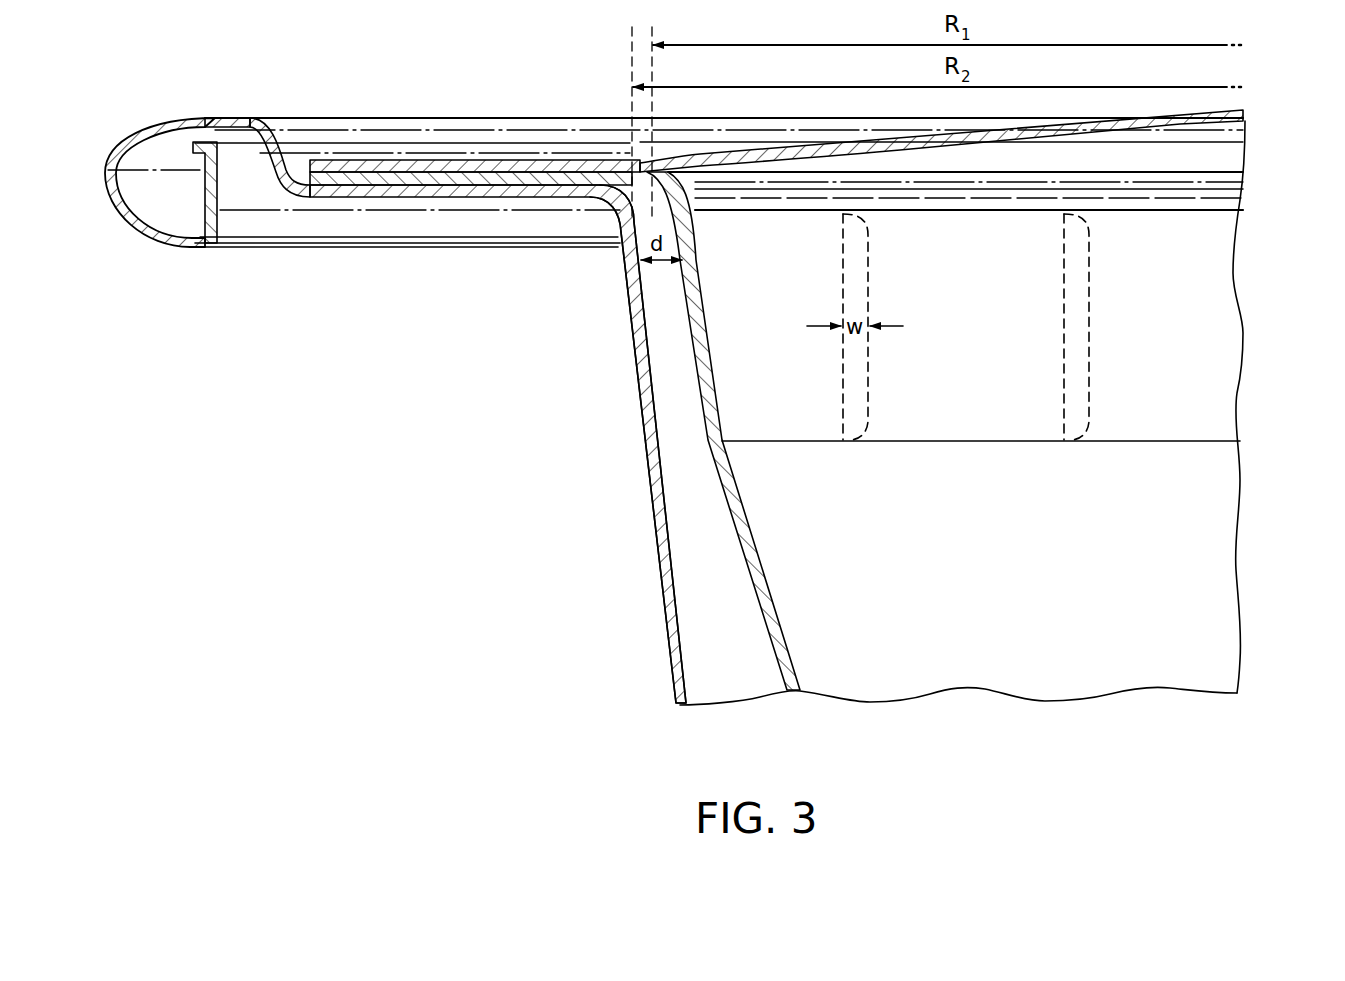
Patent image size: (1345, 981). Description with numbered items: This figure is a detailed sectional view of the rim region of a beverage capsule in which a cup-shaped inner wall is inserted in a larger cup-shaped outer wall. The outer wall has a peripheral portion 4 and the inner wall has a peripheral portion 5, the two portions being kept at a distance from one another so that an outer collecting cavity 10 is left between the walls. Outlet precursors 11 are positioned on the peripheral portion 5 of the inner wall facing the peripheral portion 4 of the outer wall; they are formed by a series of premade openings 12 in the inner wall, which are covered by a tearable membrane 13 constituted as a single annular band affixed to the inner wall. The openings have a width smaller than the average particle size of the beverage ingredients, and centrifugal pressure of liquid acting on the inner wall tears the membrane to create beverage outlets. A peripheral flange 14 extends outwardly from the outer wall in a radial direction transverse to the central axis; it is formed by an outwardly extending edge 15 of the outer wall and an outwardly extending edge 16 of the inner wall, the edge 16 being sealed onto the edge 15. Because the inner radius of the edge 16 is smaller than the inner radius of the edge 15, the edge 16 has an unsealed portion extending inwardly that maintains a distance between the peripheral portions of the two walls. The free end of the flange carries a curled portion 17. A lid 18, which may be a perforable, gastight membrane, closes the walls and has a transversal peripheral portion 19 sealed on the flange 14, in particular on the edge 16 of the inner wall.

The peripheral portion 4 is at (612, 217).
The peripheral portion 5 is at (1257, 173).
The outer collecting cavity 10 is at (730, 657).
The outlet precursors 11 is at (1085, 446).
The premade openings 12 is at (1089, 333).
The tearable membrane 13 is at (1175, 432).
The peripheral flange 14 is at (628, 108).
The outwardly extending edge 15 is at (322, 200).
The outwardly extending edge 16 is at (423, 182).
The curled portion 17 is at (172, 247).
The lid 18 is at (1194, 124).
The transversal peripheral portion 19 is at (493, 170).